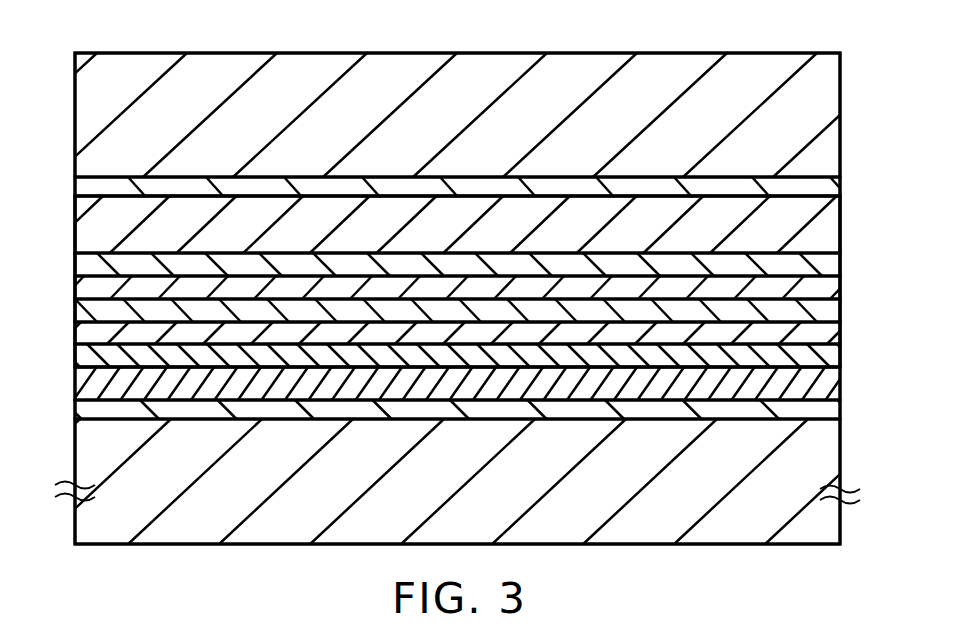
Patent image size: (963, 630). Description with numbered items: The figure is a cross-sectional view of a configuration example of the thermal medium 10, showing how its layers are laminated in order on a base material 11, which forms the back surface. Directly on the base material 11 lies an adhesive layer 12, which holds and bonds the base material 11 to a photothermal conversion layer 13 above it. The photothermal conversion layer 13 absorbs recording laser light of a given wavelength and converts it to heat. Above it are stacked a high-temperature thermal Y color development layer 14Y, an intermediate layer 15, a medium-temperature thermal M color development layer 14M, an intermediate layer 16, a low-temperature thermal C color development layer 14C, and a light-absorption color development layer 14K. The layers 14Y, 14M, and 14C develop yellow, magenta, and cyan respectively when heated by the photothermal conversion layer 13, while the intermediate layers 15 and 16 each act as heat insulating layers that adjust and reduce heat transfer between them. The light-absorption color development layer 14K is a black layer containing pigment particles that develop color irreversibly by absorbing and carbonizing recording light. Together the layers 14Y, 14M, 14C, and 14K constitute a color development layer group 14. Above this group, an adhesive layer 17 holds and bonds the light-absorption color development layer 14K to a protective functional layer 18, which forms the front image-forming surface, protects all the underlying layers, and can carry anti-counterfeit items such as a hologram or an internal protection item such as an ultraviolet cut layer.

The thermal medium 10 is at (142, 53).
The base material 11 is at (56, 419).
The adhesive layer 12 is at (56, 400).
The photothermal conversion layer 13 is at (56, 367).
The color development layer group 14 is at (56, 196).
The light-absorption color development layer 14K is at (830, 230).
The low-temperature thermal C color development layer 14C is at (830, 266).
The medium-temperature thermal M color development layer 14M is at (830, 308).
The high-temperature thermal Y color development layer 14Y is at (830, 355).
The intermediate layer 15 is at (830, 332).
The intermediate layer 16 is at (830, 288).
The adhesive layer 17 is at (56, 177).
The protective functional layer 18 is at (56, 53).